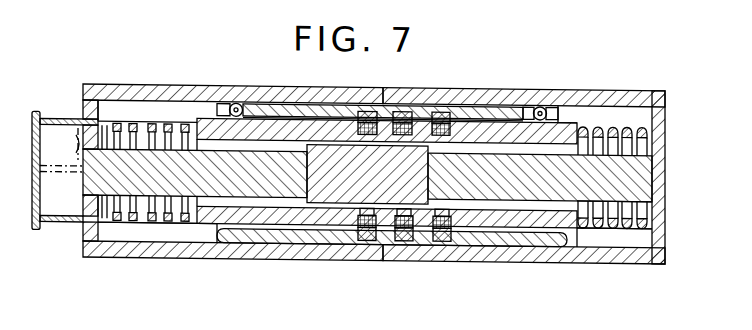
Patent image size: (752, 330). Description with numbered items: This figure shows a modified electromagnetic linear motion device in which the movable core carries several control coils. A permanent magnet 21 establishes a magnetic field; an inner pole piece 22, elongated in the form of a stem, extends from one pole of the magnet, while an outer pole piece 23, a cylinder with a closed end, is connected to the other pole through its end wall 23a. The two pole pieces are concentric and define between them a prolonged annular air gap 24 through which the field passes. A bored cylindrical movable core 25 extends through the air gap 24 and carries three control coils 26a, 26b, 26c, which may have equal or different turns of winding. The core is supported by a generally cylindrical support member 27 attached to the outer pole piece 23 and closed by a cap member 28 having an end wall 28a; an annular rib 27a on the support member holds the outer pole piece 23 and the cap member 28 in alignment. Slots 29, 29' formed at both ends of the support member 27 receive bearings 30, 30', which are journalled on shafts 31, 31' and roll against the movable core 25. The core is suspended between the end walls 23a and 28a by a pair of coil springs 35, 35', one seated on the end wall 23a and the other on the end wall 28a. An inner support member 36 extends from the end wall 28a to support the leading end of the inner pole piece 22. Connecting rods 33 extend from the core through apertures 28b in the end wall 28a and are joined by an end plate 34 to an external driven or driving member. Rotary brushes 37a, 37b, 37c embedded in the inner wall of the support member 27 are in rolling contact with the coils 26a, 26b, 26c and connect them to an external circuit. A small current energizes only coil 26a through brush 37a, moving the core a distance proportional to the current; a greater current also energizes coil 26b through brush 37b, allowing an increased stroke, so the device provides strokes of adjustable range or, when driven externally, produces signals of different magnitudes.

The permanent magnet 21 is at (587, 187).
The inner pole piece 22 is at (367, 180).
The outer pole piece 23 is at (593, 258).
The end wall 23a is at (668, 233).
The air gap 24 is at (565, 236).
The movable core 25 is at (263, 211).
The control coil 26a is at (358, 223).
The control coil 26b is at (402, 216).
The control coil 26c is at (441, 214).
The support member 27 is at (463, 108).
The annular rib 27a is at (376, 110).
The cap member 28 is at (218, 258).
The end wall 28a is at (80, 240).
The apertures 28b is at (84, 119).
The slot 29 is at (219, 86).
The slot 29' is at (528, 92).
The bearing 30 is at (383, 89).
The bearing 30' is at (572, 92).
The shaft 31 is at (249, 74).
The shaft 31' is at (552, 77).
The connecting rods 33 is at (57, 119).
The end plate 34 is at (33, 228).
The coil spring 35 is at (617, 156).
The coil spring 35' is at (147, 205).
The inner support member 36 is at (228, 177).
The rotary brush 37a is at (385, 240).
The rotary brush 37b is at (398, 239).
The rotary brush 37c is at (454, 243).